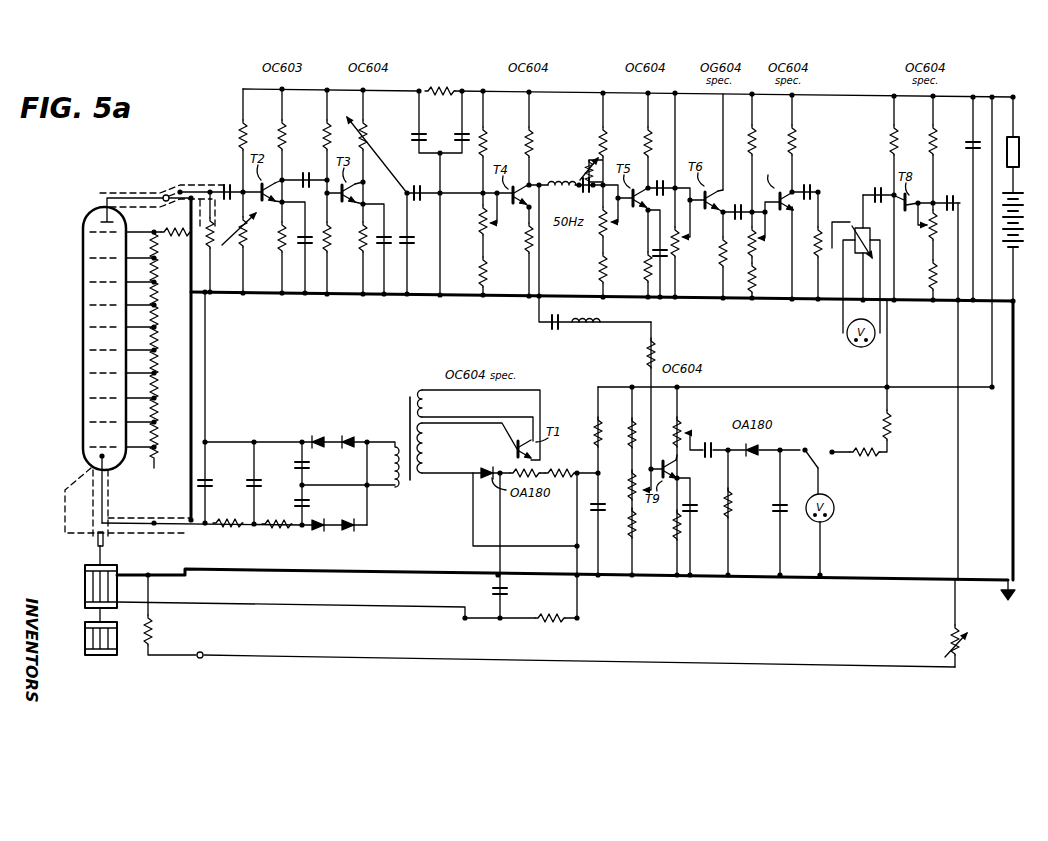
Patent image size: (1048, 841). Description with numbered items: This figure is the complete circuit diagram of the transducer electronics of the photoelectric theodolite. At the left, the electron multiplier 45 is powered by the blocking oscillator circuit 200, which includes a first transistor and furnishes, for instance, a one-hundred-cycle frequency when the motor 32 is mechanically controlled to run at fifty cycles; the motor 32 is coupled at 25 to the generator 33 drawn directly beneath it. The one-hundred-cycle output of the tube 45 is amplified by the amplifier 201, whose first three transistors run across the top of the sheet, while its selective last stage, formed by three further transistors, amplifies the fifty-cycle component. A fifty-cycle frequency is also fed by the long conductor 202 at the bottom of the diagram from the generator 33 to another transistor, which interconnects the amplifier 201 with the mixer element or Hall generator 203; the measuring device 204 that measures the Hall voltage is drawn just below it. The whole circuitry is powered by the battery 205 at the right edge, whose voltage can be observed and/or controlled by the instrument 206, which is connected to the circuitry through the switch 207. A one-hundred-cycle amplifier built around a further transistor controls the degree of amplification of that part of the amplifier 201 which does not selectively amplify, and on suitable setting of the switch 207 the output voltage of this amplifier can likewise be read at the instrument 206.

The electron multiplier 45 is at (82, 345).
The coupling 25 is at (92, 540).
The motor 32 is at (118, 567).
The generator 33 is at (117, 655).
The blocking oscillator circuit 200 is at (430, 516).
The amplifier 201 is at (858, 161).
The conductor 202 is at (566, 660).
The Hall generator 203 is at (850, 223).
The measuring device 204 is at (864, 345).
The battery 205 is at (1028, 232).
The instrument 206 is at (834, 514).
The switch 207 is at (818, 444).